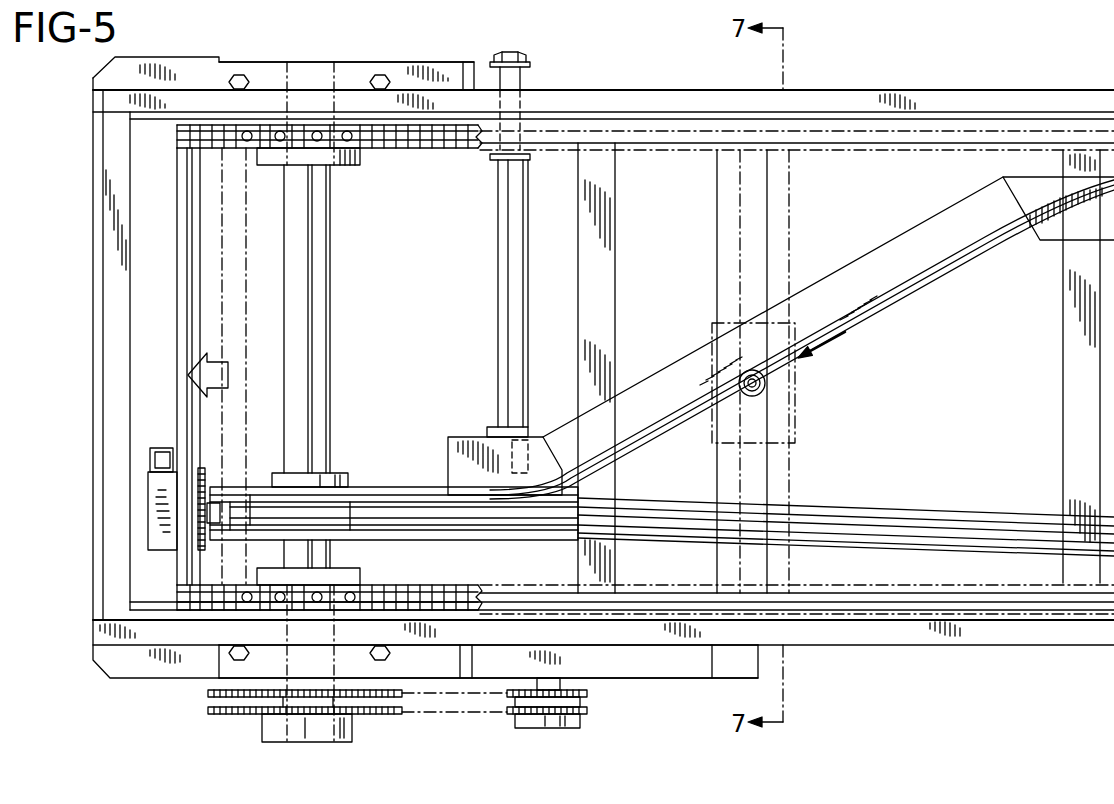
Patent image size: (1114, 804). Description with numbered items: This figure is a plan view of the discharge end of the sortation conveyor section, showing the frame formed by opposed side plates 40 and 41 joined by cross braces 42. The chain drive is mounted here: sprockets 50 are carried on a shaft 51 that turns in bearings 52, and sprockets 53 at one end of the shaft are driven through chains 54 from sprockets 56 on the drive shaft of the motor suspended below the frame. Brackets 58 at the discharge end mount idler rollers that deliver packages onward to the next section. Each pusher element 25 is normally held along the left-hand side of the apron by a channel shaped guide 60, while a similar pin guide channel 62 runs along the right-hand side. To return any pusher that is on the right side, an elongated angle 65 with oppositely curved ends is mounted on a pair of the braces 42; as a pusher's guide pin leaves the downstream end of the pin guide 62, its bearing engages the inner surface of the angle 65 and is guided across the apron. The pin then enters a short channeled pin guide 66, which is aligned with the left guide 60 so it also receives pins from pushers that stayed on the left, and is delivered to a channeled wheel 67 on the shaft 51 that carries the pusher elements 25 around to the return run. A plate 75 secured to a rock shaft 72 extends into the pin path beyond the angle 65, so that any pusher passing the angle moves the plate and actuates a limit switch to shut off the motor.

The pusher element 25 is at (148, 485).
The side plate 40 is at (852, 637).
The side plate 41 is at (945, 106).
The cross brace 42 is at (608, 240).
The sprocket 50 is at (388, 150).
The shaft 51 is at (328, 218).
The bearing 52 is at (346, 72).
The sprocket 53 is at (210, 696).
The chain 54 is at (428, 712).
The sprocket 56 is at (587, 712).
The bracket 58 is at (177, 303).
The channel shaped guide 60 is at (903, 528).
The pin guide channel 62 is at (897, 144).
The elongated angle 65 is at (940, 267).
The channeled pin guide 66 is at (390, 490).
The channeled wheel 67 is at (356, 493).
The rock shaft 72 is at (518, 80).
The plate 75 is at (530, 245).